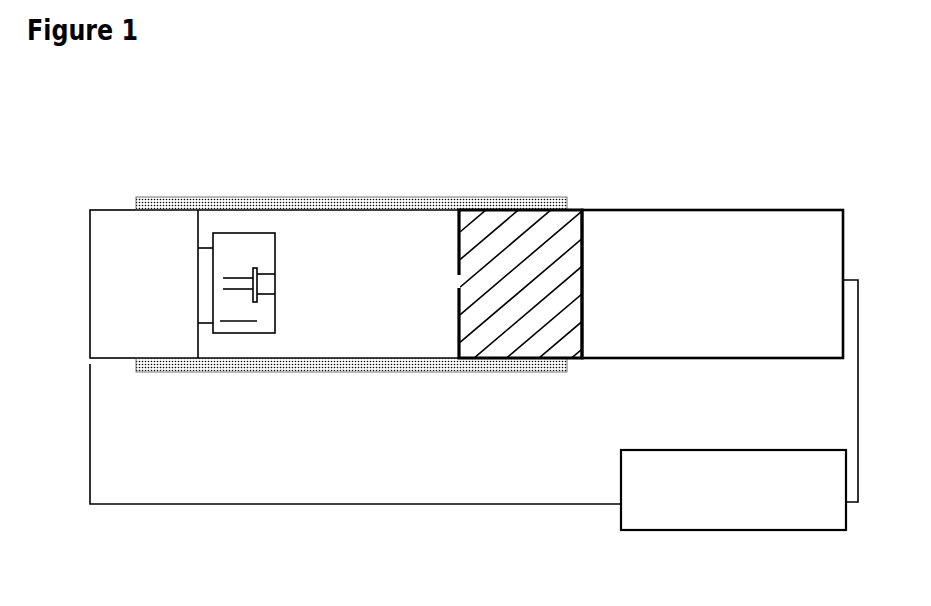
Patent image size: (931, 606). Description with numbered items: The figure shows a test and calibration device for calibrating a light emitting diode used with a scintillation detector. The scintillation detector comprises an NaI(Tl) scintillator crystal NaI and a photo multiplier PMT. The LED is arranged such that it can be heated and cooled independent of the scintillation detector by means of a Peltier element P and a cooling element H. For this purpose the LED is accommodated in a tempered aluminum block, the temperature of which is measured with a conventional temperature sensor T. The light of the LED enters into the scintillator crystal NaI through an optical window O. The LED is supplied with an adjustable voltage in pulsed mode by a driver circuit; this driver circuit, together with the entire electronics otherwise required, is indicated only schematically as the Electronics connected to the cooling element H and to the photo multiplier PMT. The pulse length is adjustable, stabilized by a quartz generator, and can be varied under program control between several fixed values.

The cooling element H is at (474, 350).
The Peltier element P is at (205, 248).
The element LED is at (283, 275).
The temperature sensor T is at (249, 321).
The optical window O is at (448, 296).
The NaI(Tl) scintillator crystal NaI is at (520, 290).
The photo multiplier PMT is at (712, 284).
The electronics Electronics is at (733, 490).